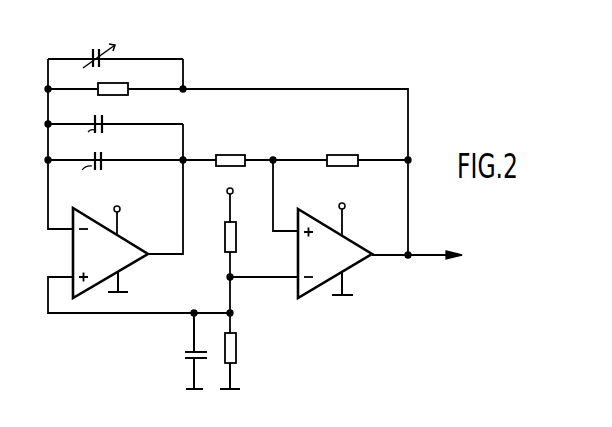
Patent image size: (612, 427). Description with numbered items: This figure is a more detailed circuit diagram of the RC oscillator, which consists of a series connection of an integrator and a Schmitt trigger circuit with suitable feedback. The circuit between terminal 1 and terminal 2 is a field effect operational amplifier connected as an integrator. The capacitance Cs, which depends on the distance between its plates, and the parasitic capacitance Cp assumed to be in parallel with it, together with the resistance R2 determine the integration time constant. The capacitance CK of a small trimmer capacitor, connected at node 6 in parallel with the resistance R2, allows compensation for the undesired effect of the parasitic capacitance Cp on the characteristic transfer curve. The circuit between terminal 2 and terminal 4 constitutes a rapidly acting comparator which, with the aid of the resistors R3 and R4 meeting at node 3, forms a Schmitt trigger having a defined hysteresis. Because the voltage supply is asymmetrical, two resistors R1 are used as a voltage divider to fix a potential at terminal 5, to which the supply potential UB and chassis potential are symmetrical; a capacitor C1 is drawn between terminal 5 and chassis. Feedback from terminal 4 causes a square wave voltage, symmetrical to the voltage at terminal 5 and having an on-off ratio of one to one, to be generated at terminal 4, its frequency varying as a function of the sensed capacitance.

The terminal 1 is at (52, 198).
The terminal 2 is at (130, 187).
The node 3 is at (286, 178).
The terminal 4 is at (410, 208).
The terminal 5 is at (173, 292).
The node 6 is at (226, 157).
The capacitance of the small trimmer capacitor CK is at (115, 92).
The resistance R2 is at (125, 79).
The parasitic capacitance Cp is at (115, 134).
The capacitance Cs is at (81, 169).
The resistor R3 is at (230, 146).
The resistor R4 is at (342, 146).
The resistors R1 is at (242, 288).
The capacitor C1 is at (186, 351).
The supply potential UB is at (241, 208).